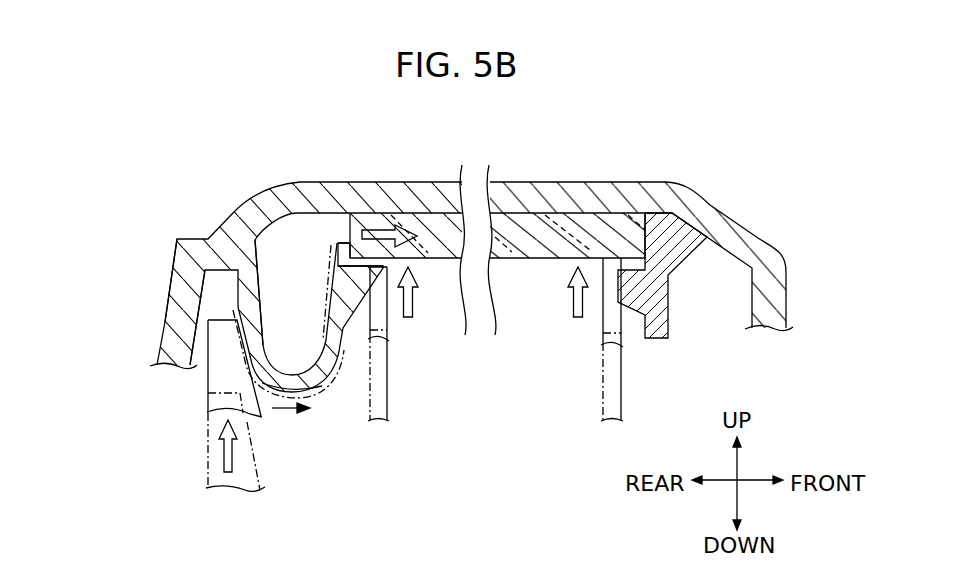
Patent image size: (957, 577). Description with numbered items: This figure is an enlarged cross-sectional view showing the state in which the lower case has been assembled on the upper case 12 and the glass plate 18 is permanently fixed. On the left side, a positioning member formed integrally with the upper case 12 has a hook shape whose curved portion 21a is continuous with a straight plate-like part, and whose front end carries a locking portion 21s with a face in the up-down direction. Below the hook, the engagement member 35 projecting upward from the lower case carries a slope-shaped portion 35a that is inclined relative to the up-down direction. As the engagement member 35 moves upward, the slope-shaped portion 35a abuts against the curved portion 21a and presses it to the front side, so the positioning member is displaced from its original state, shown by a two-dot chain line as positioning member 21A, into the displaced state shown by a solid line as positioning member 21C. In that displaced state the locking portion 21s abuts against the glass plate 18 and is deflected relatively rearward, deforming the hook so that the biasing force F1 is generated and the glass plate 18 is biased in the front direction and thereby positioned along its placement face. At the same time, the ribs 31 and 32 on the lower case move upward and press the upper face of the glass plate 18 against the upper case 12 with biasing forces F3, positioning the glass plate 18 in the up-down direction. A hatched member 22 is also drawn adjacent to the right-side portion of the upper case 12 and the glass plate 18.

The upper case 12 is at (289, 192).
The glass plate 18 is at (422, 225).
The locking portion 21s is at (343, 242).
The positioning member 21A is at (235, 301).
The positioning member 21C is at (265, 315).
The curved portion 21a is at (327, 394).
The engagement member 22 is at (663, 307).
The rib 31 is at (625, 335).
The rib 32 is at (389, 328).
The engagement member 35 is at (208, 380).
The slope-shaped portion 35a is at (265, 417).
The biasing force F1 is at (382, 228).
The biasing forces F3 is at (493, 294).